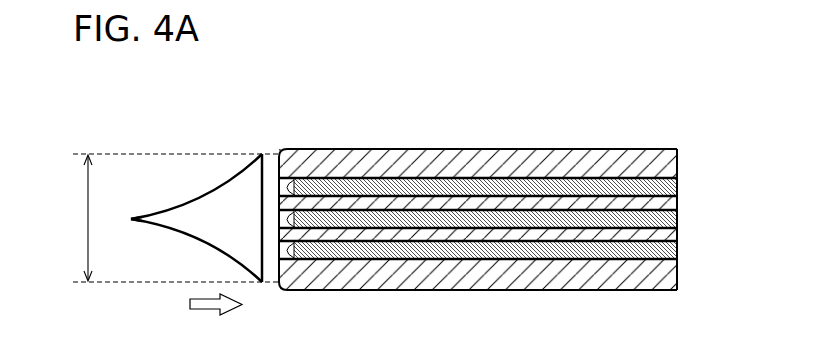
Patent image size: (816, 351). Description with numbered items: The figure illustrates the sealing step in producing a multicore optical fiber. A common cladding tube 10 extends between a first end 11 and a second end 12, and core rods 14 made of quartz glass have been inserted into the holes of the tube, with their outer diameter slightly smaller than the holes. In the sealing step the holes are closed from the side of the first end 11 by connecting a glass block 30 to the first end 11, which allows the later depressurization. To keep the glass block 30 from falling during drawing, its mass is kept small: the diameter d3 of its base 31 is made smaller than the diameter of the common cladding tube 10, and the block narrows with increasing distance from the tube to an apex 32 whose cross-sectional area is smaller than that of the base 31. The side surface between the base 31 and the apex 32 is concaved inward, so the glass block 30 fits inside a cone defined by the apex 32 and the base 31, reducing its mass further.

The common cladding tube 10 is at (511, 149).
The first end 11 is at (278, 154).
The second end 12 is at (678, 150).
The core rods 14 is at (723, 220).
The glass block 30 is at (203, 240).
The base 31 is at (265, 232).
The apex 32 is at (131, 221).
The diameter of the base d3 is at (87, 219).